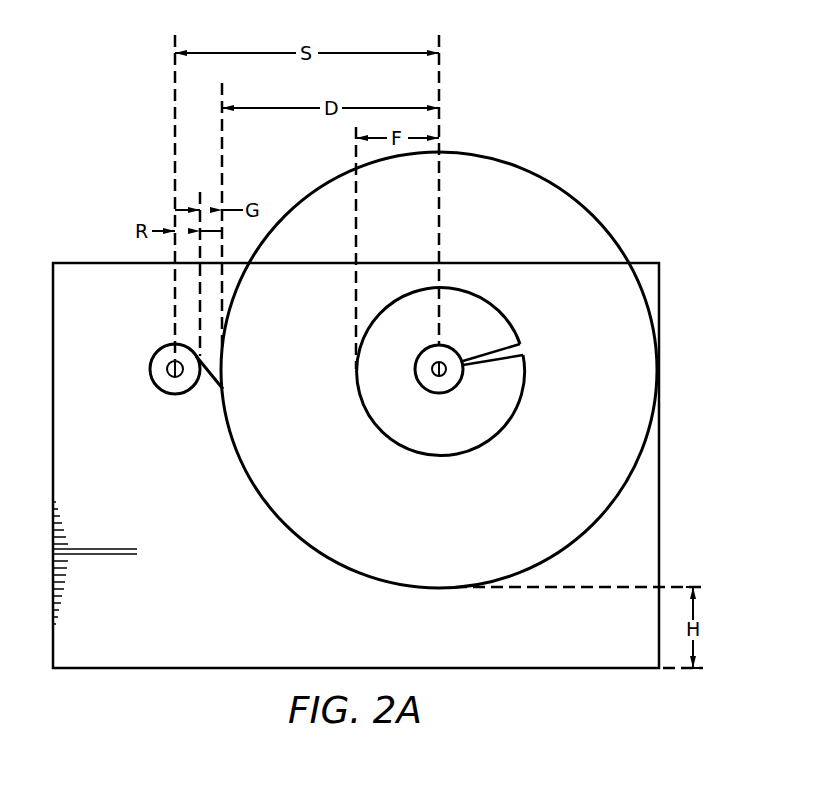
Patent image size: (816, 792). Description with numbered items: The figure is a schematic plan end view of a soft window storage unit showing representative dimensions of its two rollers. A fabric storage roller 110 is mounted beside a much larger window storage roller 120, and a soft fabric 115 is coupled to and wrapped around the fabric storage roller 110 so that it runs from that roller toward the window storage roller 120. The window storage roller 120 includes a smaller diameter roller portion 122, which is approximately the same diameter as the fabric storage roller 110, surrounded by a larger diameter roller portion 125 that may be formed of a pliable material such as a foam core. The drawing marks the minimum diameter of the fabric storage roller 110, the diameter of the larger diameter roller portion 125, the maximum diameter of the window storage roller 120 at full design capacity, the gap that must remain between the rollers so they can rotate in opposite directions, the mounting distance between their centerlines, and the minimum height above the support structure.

The fabric storage roller 110 is at (161, 373).
The soft fabric 115 is at (214, 384).
The window storage roller 120 is at (556, 235).
The smaller diameter roller portion 122 is at (428, 378).
The larger diameter roller portion 125 is at (463, 419).